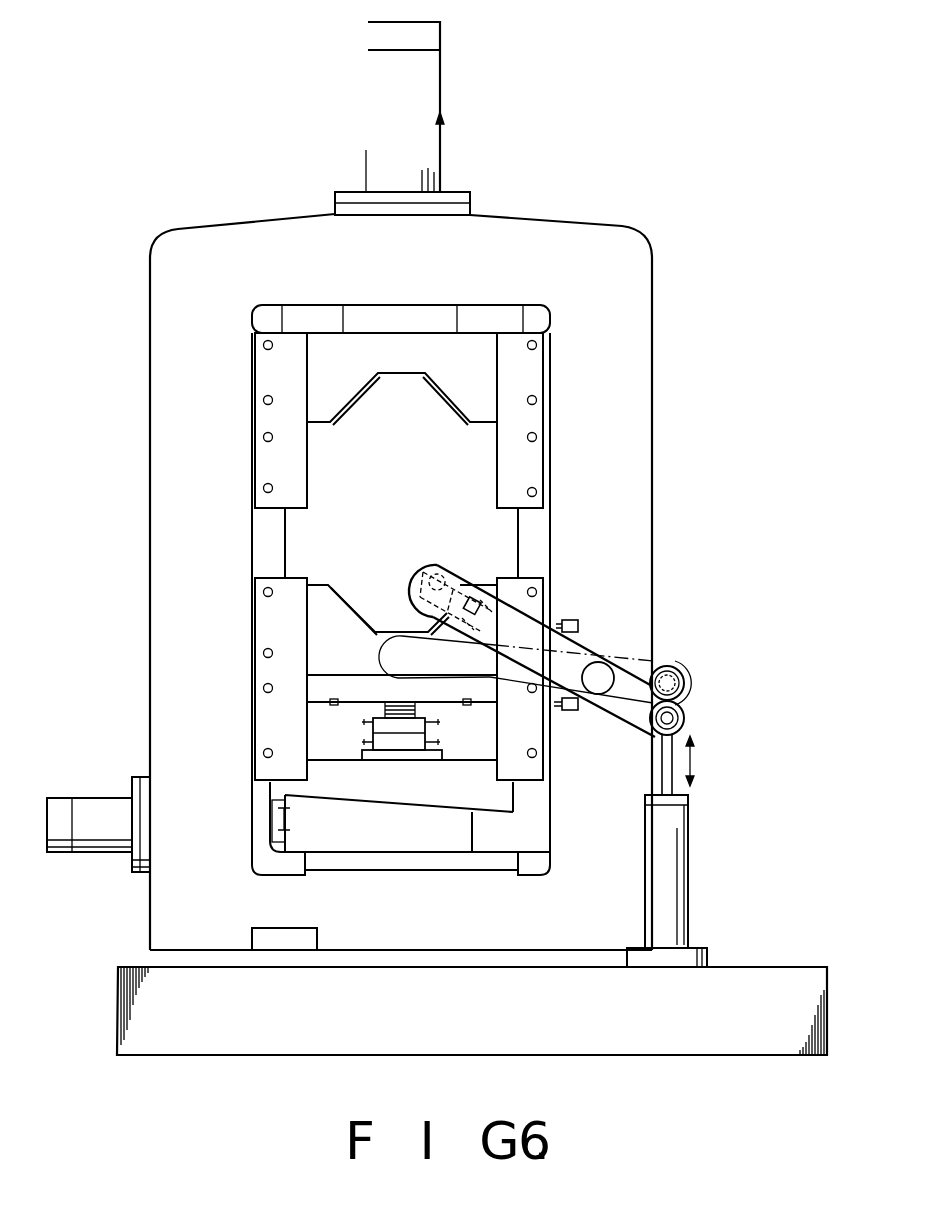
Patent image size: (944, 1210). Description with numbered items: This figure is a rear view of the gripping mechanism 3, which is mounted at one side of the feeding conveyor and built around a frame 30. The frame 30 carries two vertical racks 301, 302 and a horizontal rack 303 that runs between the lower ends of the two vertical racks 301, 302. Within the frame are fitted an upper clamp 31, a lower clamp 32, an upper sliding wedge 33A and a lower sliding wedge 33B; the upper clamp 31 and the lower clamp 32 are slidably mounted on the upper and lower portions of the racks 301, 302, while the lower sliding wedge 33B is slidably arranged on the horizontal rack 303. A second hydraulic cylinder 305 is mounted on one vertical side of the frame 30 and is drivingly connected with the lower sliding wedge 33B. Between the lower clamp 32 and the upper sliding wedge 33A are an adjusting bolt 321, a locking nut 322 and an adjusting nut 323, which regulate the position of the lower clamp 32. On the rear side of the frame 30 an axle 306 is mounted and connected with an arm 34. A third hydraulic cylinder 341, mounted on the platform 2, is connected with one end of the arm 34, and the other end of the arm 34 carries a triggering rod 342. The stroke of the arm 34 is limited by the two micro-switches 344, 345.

The platform 2 is at (118, 1012).
The gripping mechanism 3 is at (209, 215).
The frame 30 is at (437, 107).
The upper clamp 31 is at (412, 363).
The lower clamp 32 is at (343, 626).
The upper sliding wedge 33A is at (515, 793).
The lower sliding wedge 33B is at (448, 838).
The arm 34 is at (588, 644).
The vertical rack 301 is at (523, 535).
The vertical rack 302 is at (277, 548).
The horizontal rack 303 is at (377, 870).
The second hydraulic cylinder 305 is at (108, 805).
The axle 306 is at (607, 678).
The adjusting bolt 321 is at (385, 708).
The locking nut 322 is at (428, 718).
The adjusting nut 323 is at (362, 724).
The third hydraulic cylinder 341 is at (683, 880).
The triggering rod 342 is at (440, 565).
The micro-switch 344 is at (575, 620).
The micro-switch 345 is at (568, 710).